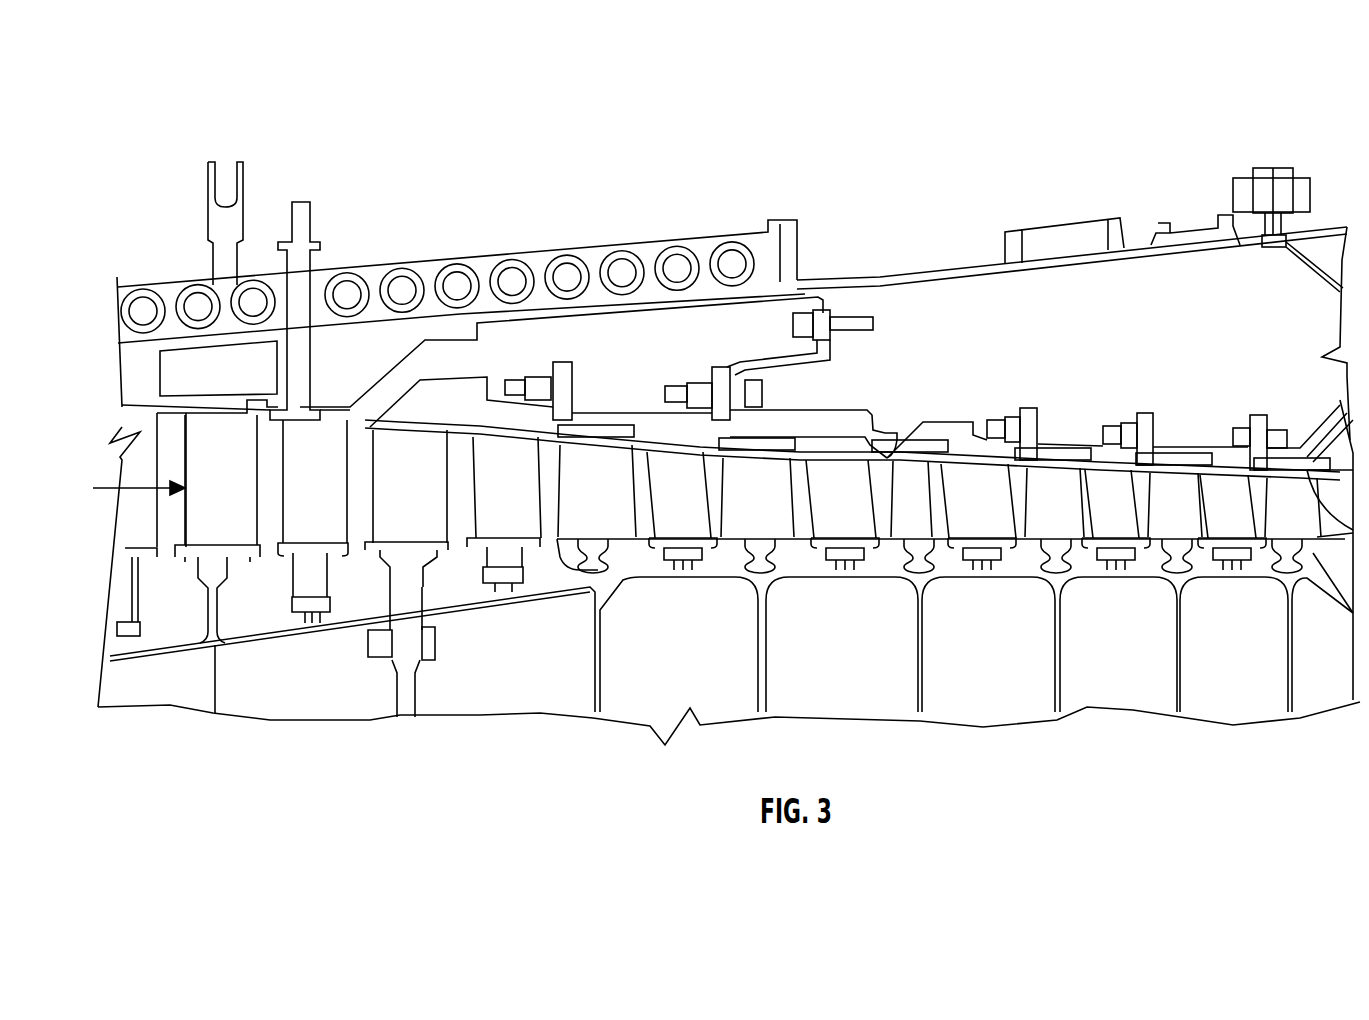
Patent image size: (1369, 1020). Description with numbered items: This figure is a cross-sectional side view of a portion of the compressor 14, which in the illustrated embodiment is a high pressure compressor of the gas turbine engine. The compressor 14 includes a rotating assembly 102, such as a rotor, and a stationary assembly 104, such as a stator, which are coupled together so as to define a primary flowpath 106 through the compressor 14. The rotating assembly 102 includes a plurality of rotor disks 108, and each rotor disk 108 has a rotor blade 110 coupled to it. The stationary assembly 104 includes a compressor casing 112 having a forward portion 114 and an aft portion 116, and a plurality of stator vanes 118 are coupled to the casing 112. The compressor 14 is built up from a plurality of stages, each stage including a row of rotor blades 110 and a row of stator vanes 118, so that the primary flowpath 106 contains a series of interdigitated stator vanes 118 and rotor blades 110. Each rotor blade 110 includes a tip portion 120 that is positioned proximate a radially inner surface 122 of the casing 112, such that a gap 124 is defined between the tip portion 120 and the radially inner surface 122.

The compressor 14 is at (330, 150).
The rotating assembly 102 is at (170, 705).
The stationary assembly 104 is at (437, 288).
The primary flowpath 106 is at (110, 497).
The rotor disk 108 is at (408, 695).
The rotor blade 110 is at (430, 533).
The compressor casing 112 is at (118, 318).
The forward portion 114 is at (410, 362).
The aft portion 116 is at (870, 362).
The stator vane 118 is at (527, 523).
The tip portion 120 is at (385, 433).
The radially inner surface 122 is at (455, 437).
The gap 124 is at (355, 427).